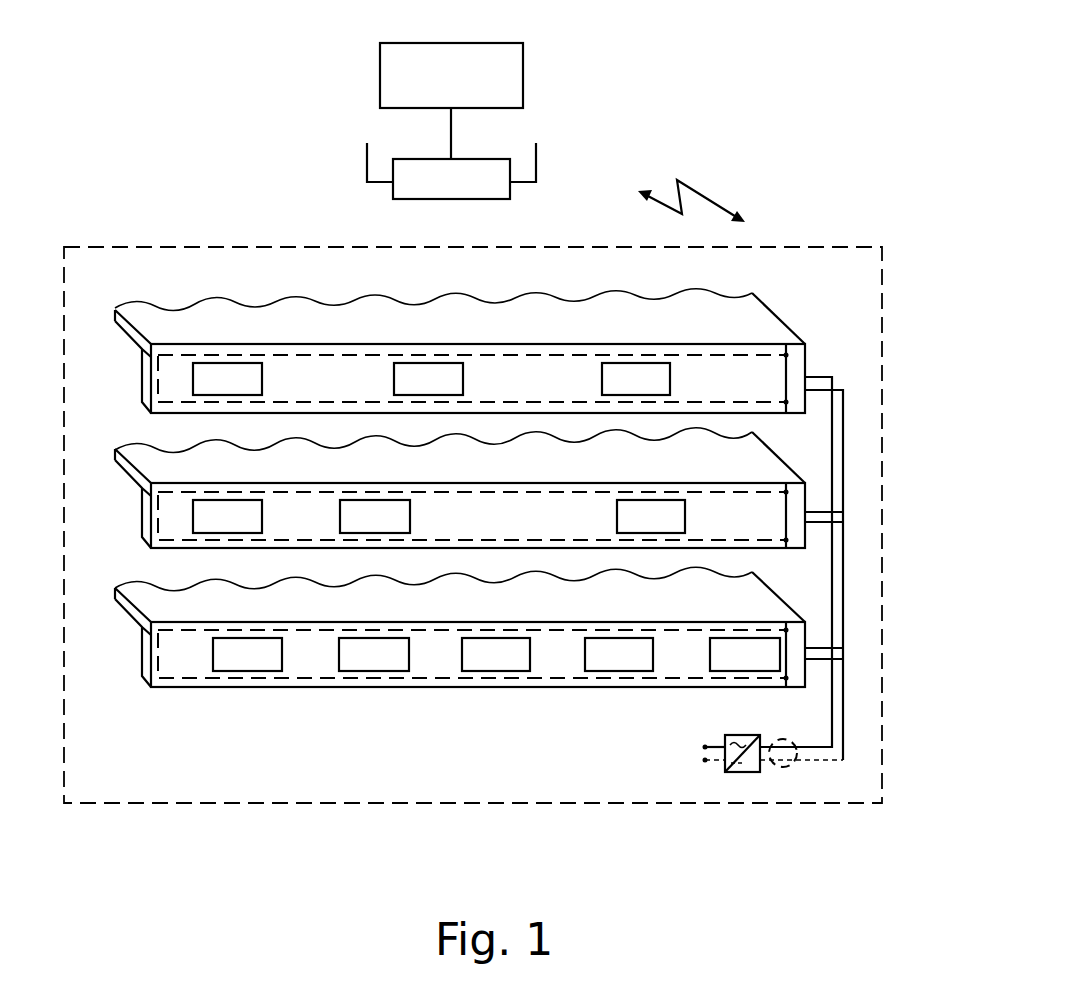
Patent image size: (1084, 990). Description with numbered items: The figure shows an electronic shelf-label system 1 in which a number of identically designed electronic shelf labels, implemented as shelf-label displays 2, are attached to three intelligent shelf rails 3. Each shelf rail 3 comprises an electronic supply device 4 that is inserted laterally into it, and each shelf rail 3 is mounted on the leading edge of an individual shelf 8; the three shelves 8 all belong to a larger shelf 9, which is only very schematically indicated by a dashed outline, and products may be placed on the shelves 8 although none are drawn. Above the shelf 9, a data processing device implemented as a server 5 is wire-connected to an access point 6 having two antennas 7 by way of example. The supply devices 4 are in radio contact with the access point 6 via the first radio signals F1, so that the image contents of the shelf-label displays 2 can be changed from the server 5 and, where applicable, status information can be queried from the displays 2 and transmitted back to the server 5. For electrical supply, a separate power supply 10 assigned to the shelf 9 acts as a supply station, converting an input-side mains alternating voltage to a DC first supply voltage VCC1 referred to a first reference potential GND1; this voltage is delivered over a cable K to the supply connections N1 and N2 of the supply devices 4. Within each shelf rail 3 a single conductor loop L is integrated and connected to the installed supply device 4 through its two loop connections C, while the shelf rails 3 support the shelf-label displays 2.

The shelf-label system 1 is at (706, 57).
The shelf-label display 2 is at (256, 370).
The shelf rail 3 is at (143, 377).
The supply device 4 is at (797, 388).
The server 5 is at (513, 67).
The access point 6 is at (400, 189).
The antenna 7 is at (367, 143).
The shelf 8 is at (116, 316).
The shelf 9 is at (240, 804).
The power supply 10 is at (743, 773).
The loop connection C is at (787, 353).
The supply connection N1 is at (813, 378).
The supply connection N2 is at (828, 391).
The conductor loop L is at (473, 519).
The cable K is at (787, 768).
The first reference potential GND1 is at (800, 762).
The first supply voltage VCC1 is at (823, 762).
The first radio signal F1 is at (700, 192).